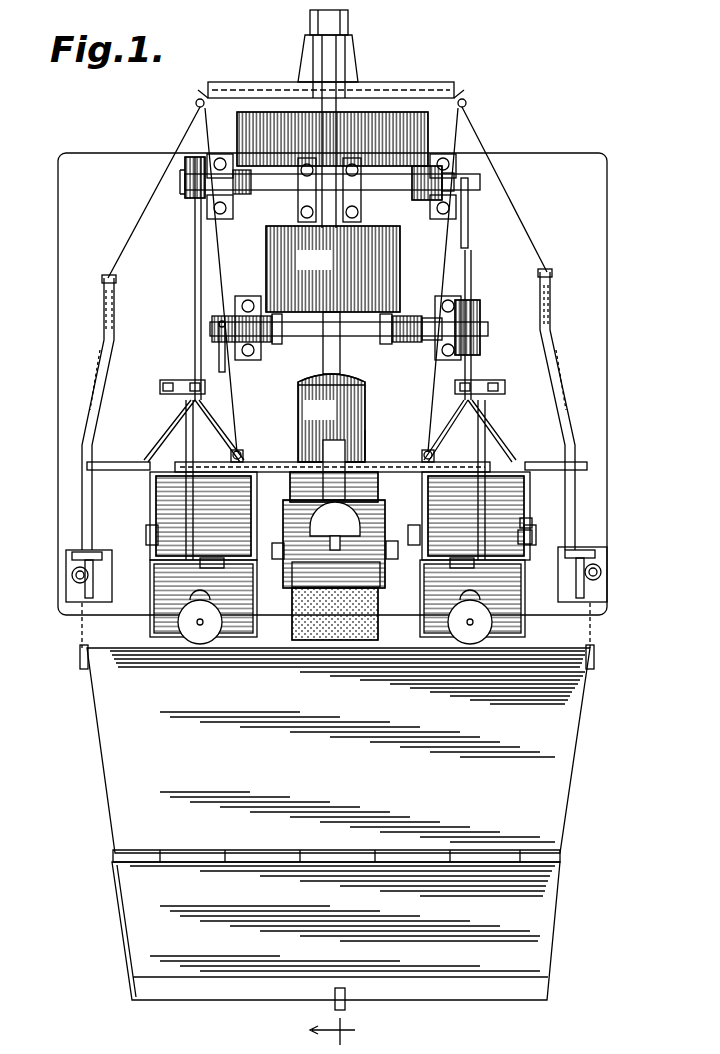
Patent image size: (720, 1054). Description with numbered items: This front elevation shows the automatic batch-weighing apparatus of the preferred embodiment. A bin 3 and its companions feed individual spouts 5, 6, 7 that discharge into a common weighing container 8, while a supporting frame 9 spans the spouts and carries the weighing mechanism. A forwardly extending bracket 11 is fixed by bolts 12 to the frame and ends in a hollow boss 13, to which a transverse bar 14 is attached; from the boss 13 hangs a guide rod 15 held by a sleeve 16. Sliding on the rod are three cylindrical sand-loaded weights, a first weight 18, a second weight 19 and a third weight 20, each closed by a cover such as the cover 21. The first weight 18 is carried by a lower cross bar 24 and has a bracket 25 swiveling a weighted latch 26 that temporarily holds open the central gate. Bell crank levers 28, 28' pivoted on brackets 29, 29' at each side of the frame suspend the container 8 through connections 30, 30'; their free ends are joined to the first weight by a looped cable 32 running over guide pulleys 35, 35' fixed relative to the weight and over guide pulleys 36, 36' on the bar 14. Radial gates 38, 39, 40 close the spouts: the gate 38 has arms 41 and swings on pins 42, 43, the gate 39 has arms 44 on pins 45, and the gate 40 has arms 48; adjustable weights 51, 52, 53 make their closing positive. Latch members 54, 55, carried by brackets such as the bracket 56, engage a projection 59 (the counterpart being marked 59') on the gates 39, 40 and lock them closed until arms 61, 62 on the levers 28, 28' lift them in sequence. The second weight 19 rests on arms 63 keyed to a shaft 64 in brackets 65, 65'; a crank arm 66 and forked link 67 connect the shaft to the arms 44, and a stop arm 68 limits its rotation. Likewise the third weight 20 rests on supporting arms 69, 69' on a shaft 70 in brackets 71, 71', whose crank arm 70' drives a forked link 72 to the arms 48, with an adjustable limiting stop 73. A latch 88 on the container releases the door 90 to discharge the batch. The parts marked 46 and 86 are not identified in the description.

The bin 3 is at (342, 1031).
The spout 5 is at (368, 490).
The spout 6 is at (500, 495).
The spout 7 is at (170, 485).
The weighing container 8 is at (548, 757).
The supporting frame 9 is at (585, 198).
The forwardly extending bracket 11 is at (352, 62).
The bolts 12 is at (300, 178).
The hollow boss 13 is at (345, 48).
The transverse bar 14 is at (408, 90).
The guide rod 15 is at (336, 346).
The sleeve 16 is at (348, 22).
The first weight 18 is at (331, 418).
The second weight 19 is at (333, 269).
The third weight 20 is at (410, 128).
The cover 21 is at (362, 384).
The lower cross bar 24 is at (390, 466).
The bracket 25 is at (322, 455).
The weighted latch 26 is at (330, 543).
The bell crank lever 28 is at (602, 409).
The bell crank lever 28' is at (60, 412).
The bracket 29 is at (607, 552).
The bracket 29' is at (60, 578).
The connection 30 is at (618, 636).
The connection 30' is at (61, 636).
The looped cable 32 is at (152, 184).
The guide pulley 35 is at (437, 285).
The guide pulley 35' is at (231, 285).
The guide pulley 36 is at (491, 108).
The guide pulley 36' is at (180, 103).
The radial gate 38 is at (300, 590).
The radial gate 39 is at (432, 606).
The radial gate 40 is at (170, 585).
The rearwardly extending arms 41 is at (300, 580).
The pin 42 is at (276, 560).
The pin 43 is at (394, 560).
The rearwardly extending arms 44 is at (418, 528).
The pins 45 is at (534, 538).
The lug 46 is at (530, 520).
The arms 48 is at (148, 545).
The adjustable weight 51 is at (182, 380).
The adjustable weight 52 is at (474, 632).
The adjustable weight 53 is at (198, 632).
The latch member 54 is at (480, 428).
The latch member 55 is at (193, 436).
The bracket 56 is at (490, 380).
The projection 59 is at (451, 574).
The left stop 59' is at (219, 573).
The arm 61 is at (538, 462).
The arm 62 is at (110, 462).
The arms 63 is at (288, 338).
The shaft 64 is at (408, 320).
The bracket 65 is at (465, 311).
The bracket 65' is at (246, 310).
The crank arm 66 is at (482, 310).
The forked link 67 is at (474, 350).
The stop arm 68 is at (226, 368).
The supporting arm 69 is at (431, 197).
The supporting arm 69' is at (224, 195).
The shaft 70 is at (332, 193).
The crank arm 70' is at (179, 197).
The bracket 71 is at (456, 183).
The bracket 71' is at (220, 172).
The forked link 72 is at (194, 264).
The adjustable limiting stop 73 is at (468, 228).
The connector 86 is at (368, 445).
The latch 88 is at (336, 1002).
The door 90 is at (336, 931).